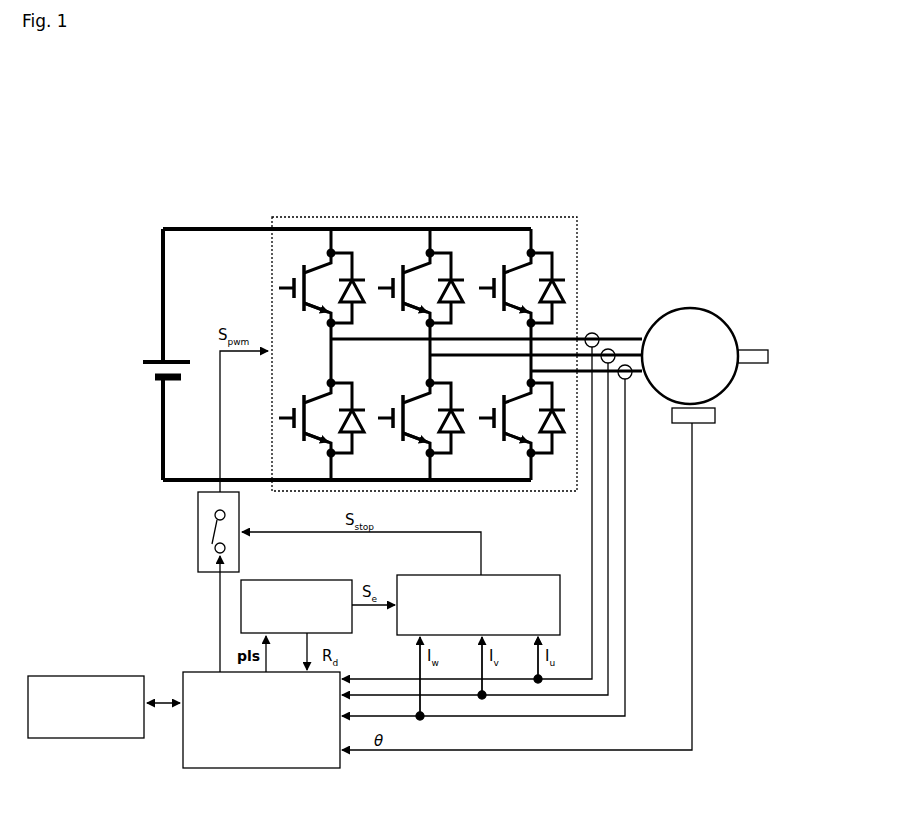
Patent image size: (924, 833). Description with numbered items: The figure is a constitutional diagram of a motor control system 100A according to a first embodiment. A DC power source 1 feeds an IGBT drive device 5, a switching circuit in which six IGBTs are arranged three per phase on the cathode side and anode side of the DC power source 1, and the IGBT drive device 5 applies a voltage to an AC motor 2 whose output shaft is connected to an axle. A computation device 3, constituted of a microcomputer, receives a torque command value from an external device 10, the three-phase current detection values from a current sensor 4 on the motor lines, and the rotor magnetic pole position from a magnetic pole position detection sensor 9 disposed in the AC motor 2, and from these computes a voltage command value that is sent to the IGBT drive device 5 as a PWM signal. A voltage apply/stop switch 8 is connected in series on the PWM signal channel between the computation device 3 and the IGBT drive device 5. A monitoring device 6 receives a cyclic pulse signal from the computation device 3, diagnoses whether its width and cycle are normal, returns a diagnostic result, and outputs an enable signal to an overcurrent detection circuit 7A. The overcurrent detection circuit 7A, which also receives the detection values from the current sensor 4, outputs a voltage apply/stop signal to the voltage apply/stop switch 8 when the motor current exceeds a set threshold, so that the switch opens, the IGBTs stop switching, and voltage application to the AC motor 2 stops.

The motor control system 100A is at (535, 190).
The DC power source 1 is at (150, 354).
The AC motor 2 is at (688, 304).
The computation device 3 is at (184, 661).
The current sensor 4 is at (638, 328).
The IGBT drive device 5 is at (408, 212).
The monitoring device 6 is at (303, 578).
The overcurrent detection circuit 7A is at (527, 572).
The voltage apply/stop switch 8 is at (192, 543).
The magnetic pole position detection sensor 9 is at (706, 428).
The external device 10 is at (100, 671).